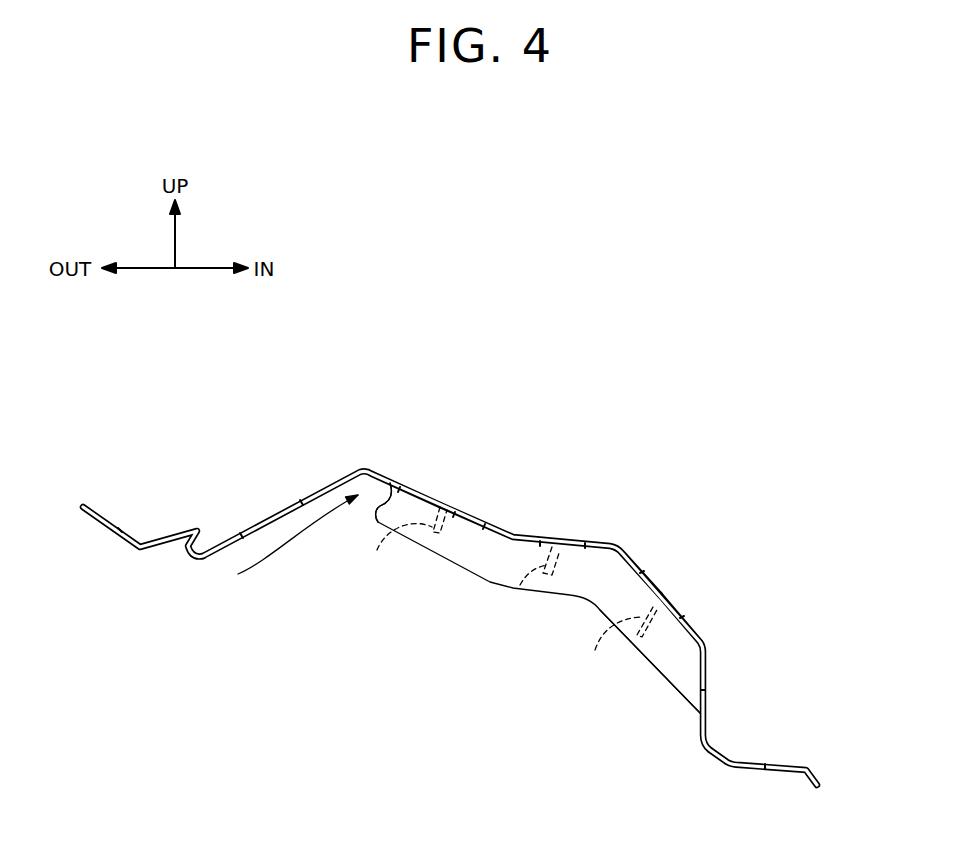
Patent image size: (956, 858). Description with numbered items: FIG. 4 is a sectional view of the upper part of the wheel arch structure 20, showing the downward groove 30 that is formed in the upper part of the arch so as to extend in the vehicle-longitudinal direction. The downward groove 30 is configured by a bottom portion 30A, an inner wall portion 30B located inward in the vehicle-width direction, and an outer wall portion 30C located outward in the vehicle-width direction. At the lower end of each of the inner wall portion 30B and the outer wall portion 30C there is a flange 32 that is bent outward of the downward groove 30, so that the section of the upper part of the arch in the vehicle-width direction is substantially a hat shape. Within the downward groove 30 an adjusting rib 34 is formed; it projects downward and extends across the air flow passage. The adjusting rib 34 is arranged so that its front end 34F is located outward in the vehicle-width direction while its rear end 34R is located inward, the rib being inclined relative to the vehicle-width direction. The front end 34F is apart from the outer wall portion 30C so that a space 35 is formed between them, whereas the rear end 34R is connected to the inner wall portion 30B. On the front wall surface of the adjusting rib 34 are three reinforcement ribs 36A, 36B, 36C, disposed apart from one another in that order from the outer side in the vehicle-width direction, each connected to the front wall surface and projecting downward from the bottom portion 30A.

The vehicle body structure / reinforcement assembly 20 is at (456, 617).
The downward groove 30 is at (456, 605).
The bottom portion 30A is at (578, 540).
The inner wall portion 30B is at (710, 697).
The outer wall portion 30C is at (310, 487).
The flange 32 is at (113, 524).
The adjusting rib 34 is at (468, 656).
The front end 34F is at (378, 505).
The rear end 34R is at (697, 713).
The space 35 is at (226, 590).
The reinforcement rib 36A is at (377, 550).
The reinforcement rib 36B is at (520, 585).
The reinforcement rib 36C is at (595, 650).